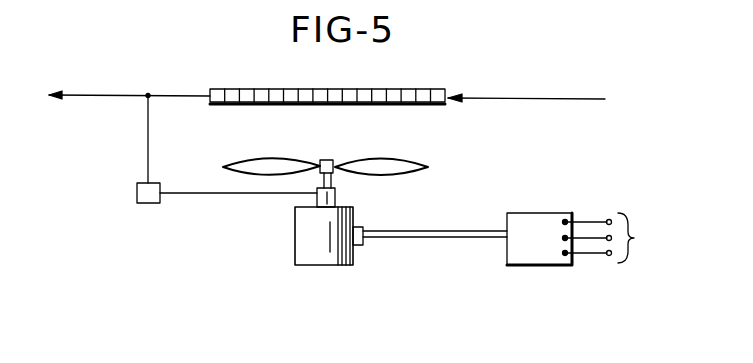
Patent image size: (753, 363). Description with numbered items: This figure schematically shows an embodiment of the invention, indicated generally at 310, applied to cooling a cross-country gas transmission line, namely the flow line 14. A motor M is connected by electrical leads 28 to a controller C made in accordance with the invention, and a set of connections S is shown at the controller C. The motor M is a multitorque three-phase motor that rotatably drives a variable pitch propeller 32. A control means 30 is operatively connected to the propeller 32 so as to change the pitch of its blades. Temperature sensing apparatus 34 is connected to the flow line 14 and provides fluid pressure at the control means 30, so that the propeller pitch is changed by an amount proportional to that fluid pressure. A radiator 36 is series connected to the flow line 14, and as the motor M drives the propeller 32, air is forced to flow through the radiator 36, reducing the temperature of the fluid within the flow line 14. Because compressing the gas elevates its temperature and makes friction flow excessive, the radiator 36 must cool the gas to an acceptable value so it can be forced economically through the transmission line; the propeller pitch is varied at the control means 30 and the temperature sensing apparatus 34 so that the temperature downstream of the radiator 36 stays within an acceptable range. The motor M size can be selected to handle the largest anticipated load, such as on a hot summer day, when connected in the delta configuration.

The flow line 14 is at (540, 99).
The radiator 36 is at (423, 105).
The propeller 32 is at (373, 158).
The control means 30 is at (335, 197).
The motor M is at (315, 265).
The electrical leads 28 is at (407, 238).
The controller C is at (533, 258).
The signal inputs S is at (607, 238).
The temperature sensing apparatus 34 is at (145, 203).
The fan drive assembly 310 is at (470, 265).